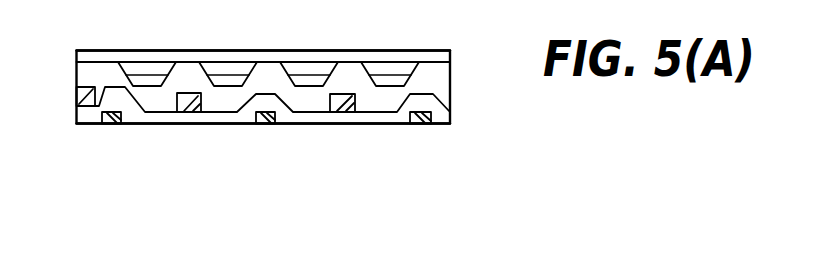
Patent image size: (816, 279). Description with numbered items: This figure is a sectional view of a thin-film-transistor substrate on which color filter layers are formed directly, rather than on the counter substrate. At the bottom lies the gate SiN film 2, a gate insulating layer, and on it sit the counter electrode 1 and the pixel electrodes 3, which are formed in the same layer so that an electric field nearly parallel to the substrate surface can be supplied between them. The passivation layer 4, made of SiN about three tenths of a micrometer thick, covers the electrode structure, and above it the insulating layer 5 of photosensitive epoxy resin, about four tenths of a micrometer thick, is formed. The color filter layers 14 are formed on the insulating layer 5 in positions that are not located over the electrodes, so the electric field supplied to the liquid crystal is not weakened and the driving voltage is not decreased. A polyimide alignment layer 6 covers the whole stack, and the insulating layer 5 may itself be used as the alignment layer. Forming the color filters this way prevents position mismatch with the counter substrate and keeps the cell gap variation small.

The counter electrode 1 is at (108, 126).
The gate SiN film 2 is at (212, 120).
The pixel electrode 3 is at (190, 100).
The passivation layer 4 is at (87, 73).
The insulating layer 5 is at (225, 77).
The alignment layer 6 is at (433, 55).
The color filter layers 14 is at (147, 67).